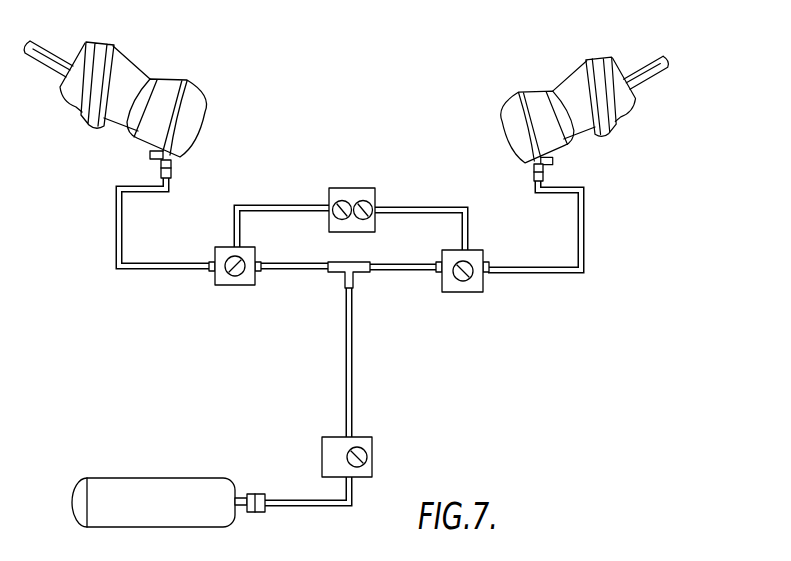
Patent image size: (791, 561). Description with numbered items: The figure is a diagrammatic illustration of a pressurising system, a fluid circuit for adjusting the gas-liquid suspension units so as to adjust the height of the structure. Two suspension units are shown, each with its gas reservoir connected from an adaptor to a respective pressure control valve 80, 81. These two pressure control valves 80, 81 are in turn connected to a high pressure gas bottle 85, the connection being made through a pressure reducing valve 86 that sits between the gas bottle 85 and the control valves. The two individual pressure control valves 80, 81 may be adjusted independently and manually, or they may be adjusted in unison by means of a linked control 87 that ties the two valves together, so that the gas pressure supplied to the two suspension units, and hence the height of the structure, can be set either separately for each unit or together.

The pressure control valve 80 is at (457, 292).
The pressure control valve 81 is at (233, 286).
The high pressure gas bottle 85 is at (166, 485).
The pressure reducing valve 86 is at (372, 447).
The linked control 87 is at (340, 202).